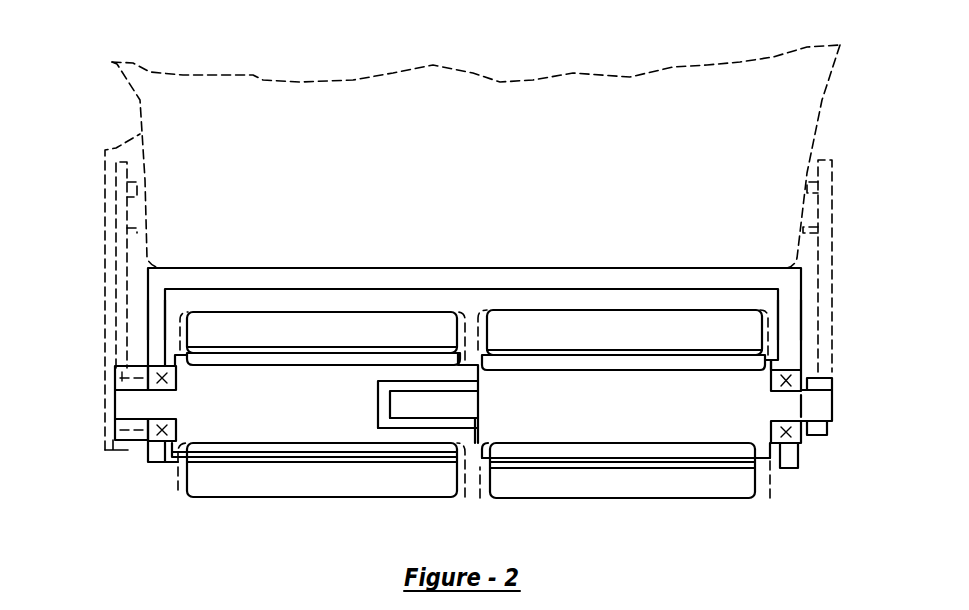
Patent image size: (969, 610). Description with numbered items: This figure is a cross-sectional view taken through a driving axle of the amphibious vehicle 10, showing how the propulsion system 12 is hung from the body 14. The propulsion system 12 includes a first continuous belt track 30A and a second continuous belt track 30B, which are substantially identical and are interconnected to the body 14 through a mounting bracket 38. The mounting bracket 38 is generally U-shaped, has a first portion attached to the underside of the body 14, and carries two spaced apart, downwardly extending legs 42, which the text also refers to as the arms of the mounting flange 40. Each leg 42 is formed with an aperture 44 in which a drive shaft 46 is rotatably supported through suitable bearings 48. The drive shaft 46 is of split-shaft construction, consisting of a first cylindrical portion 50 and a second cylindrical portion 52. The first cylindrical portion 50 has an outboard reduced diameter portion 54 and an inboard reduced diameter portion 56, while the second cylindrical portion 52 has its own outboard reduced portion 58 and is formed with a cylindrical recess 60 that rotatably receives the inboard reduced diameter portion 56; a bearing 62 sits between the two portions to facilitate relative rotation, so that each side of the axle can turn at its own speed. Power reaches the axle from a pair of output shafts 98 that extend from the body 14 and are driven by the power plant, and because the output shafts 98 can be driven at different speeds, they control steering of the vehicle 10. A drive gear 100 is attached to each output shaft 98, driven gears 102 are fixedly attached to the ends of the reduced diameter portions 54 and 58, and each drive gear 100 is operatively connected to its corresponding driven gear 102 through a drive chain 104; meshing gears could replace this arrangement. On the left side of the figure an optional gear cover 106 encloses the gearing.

The amphibious vehicle 10 is at (112, 42).
The propulsion system 12 is at (810, 488).
The body 14 is at (815, 98).
The first continuous belt track 30A is at (299, 428).
The second continuous belt track 30B is at (624, 433).
The mounting bracket 38 is at (812, 293).
The mounting flange 40 is at (550, 281).
The legs 42 is at (153, 302).
The aperture 44 is at (150, 432).
The drive shaft 46 is at (561, 424).
The bearings 48 is at (150, 366).
The first cylindrical portion 50 is at (653, 433).
The second cylindrical portion 52 is at (298, 428).
The outboard reduced diameter portion 54 is at (833, 400).
The inboard reduced diameter portion 56 is at (418, 413).
The outboard reduced portion 58 is at (113, 408).
The cylindrical recess 60 is at (385, 422).
The bearing 62 is at (447, 430).
The output shafts 98 is at (133, 197).
The drive gear 100 is at (118, 207).
The driven gears 102 is at (122, 380).
The drive chain 104 is at (117, 262).
The gear cover 106 is at (117, 147).